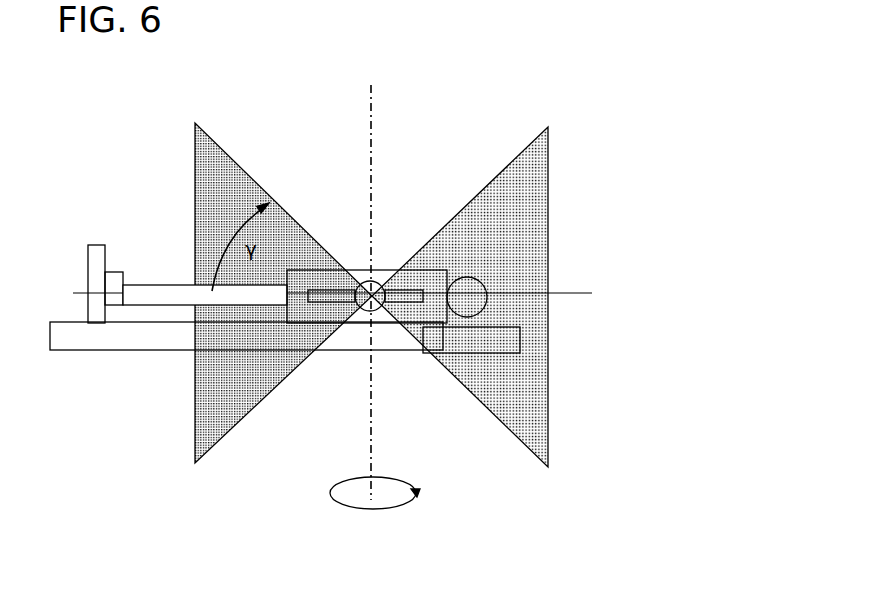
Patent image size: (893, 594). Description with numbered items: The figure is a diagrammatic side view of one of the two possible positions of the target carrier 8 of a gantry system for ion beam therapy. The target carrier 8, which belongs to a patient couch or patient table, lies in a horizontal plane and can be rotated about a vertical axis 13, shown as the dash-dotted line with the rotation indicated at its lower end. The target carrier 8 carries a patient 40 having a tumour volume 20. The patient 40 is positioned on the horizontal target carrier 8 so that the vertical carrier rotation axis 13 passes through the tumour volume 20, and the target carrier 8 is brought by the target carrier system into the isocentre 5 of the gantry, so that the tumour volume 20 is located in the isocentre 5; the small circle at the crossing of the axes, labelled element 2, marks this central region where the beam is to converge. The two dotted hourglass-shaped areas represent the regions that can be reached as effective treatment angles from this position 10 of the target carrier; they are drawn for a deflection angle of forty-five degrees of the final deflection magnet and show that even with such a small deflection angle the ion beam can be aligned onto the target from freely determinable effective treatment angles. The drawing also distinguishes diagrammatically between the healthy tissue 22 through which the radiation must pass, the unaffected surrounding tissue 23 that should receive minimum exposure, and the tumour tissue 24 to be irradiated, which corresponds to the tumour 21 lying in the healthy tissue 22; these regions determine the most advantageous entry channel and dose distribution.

The position of the target carrier 10 is at (452, 135).
The rotating mirror / deflection element 2 is at (378, 283).
The isocentre 5 is at (400, 292).
The target carrier 8 is at (90, 340).
The vertical axis 13 is at (372, 440).
The tumour volume 20 is at (312, 292).
The tumour 21 is at (312, 292).
The healthy tissue 22 is at (327, 267).
The surrounding tissue 23 is at (360, 280).
The tumour tissue 24 is at (366, 312).
The patient 40 is at (137, 292).